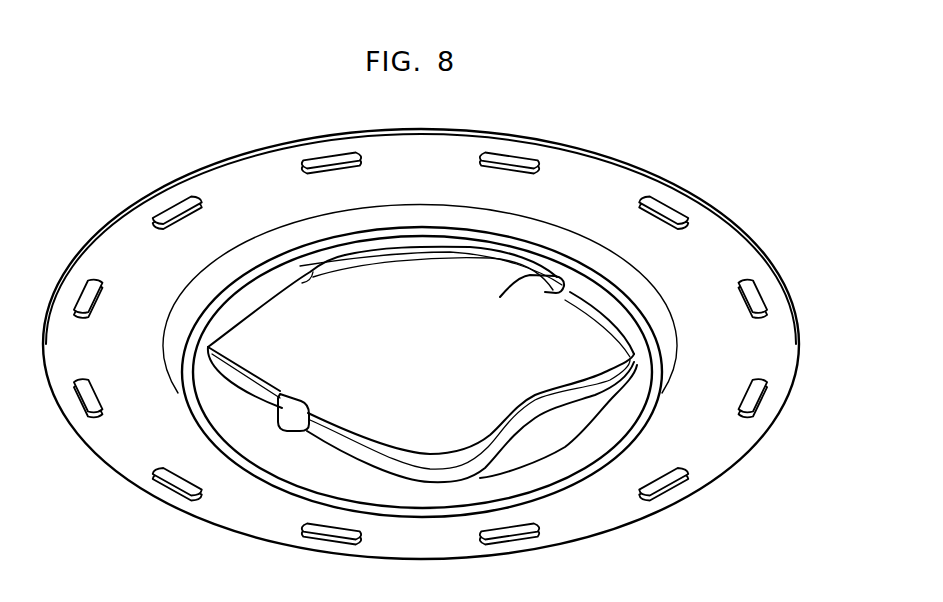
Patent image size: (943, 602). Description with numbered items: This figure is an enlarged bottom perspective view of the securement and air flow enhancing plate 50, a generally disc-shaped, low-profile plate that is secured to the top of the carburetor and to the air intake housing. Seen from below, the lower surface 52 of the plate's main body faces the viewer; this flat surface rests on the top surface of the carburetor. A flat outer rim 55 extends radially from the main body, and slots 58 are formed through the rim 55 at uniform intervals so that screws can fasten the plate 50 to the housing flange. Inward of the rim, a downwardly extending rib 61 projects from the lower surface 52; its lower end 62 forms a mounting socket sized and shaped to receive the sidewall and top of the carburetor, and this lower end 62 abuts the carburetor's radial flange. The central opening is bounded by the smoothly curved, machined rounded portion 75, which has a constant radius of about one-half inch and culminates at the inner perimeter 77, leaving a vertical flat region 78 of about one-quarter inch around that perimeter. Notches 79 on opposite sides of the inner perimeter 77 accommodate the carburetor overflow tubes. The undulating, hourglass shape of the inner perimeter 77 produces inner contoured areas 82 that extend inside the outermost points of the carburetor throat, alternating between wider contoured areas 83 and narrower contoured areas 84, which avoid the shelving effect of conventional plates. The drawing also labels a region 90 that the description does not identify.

The securement and air flow enhancing plate 50 is at (648, 137).
The lower surface 52 is at (713, 240).
The flat outer rim 55 is at (547, 153).
The slots 58 is at (492, 153).
The rib 61 is at (532, 250).
The lower end 62 is at (495, 250).
The rounded portion 75 is at (422, 364).
The inner perimeter 77 is at (266, 384).
The vertical flat region 78 is at (226, 364).
The notches 79 is at (517, 273).
The inner contoured areas 82 is at (323, 447).
The wider contoured areas 83 is at (305, 283).
The narrower contoured areas 84 is at (578, 298).
The well 90 is at (442, 347).